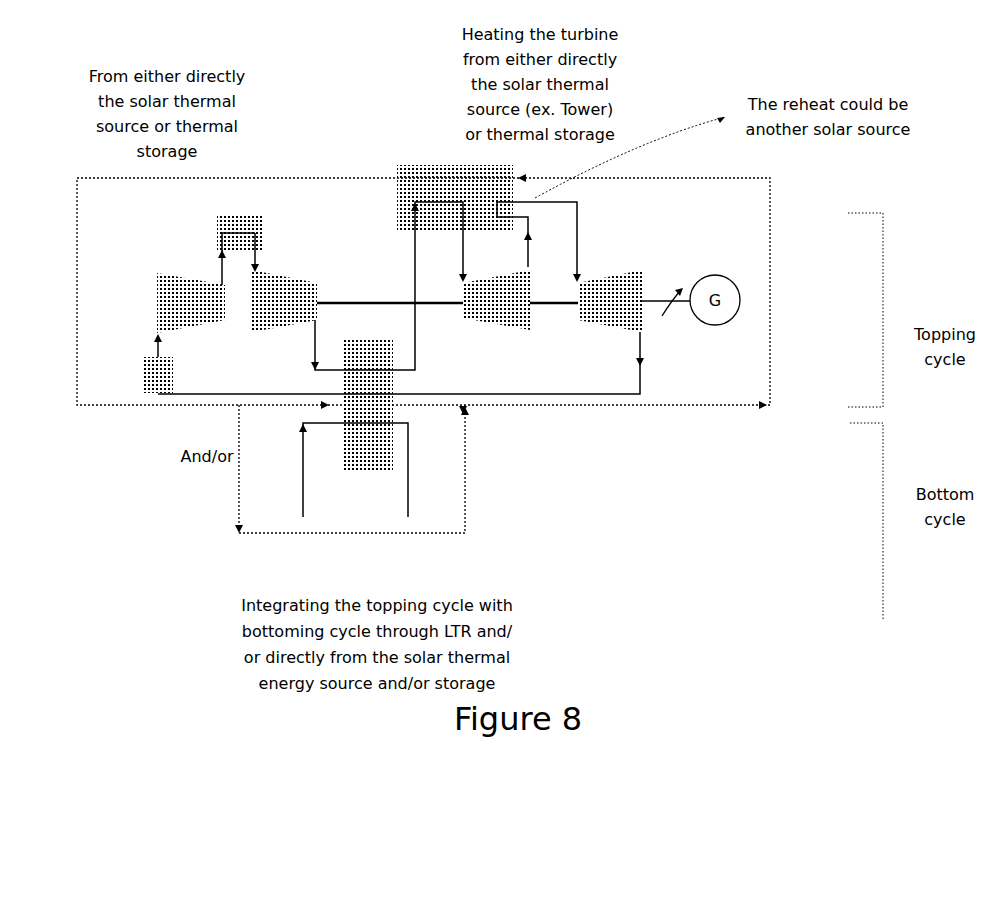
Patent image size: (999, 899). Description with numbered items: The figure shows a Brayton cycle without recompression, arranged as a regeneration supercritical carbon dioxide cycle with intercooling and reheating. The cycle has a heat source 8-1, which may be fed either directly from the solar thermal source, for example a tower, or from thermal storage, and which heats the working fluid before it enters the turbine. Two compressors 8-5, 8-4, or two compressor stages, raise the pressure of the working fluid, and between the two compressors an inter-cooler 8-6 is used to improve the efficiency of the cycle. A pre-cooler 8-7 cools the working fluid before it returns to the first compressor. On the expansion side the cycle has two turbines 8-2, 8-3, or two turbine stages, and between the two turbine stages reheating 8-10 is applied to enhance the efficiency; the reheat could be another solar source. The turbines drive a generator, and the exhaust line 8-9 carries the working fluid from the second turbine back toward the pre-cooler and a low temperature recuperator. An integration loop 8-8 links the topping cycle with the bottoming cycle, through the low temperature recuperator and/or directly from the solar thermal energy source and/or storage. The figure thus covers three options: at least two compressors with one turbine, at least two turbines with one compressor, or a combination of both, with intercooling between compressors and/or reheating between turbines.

The heat source 8-1 is at (412, 246).
The turbine 8-2 is at (520, 310).
The turbine 8-3 is at (610, 308).
The compressor 8-4 is at (357, 292).
The compressor 8-5 is at (172, 284).
The inter-cooler 8-6 is at (260, 235).
The pre-cooler 8-7 is at (158, 364).
The integration loop 8-8 is at (730, 405).
The turbine exhaust return line / low temperature recuperator 8-9 is at (393, 382).
The reheating 8-10 is at (577, 232).